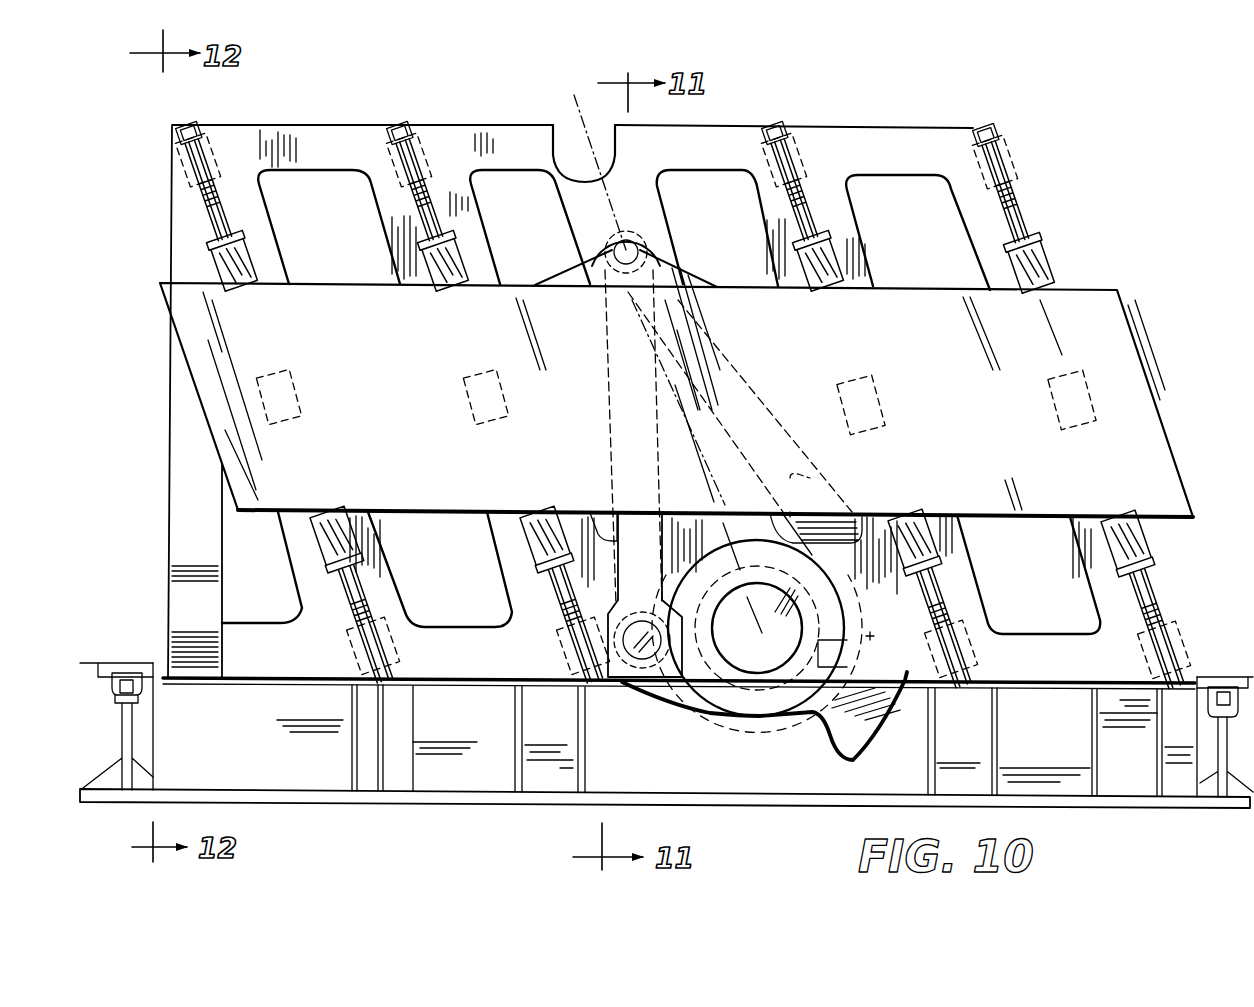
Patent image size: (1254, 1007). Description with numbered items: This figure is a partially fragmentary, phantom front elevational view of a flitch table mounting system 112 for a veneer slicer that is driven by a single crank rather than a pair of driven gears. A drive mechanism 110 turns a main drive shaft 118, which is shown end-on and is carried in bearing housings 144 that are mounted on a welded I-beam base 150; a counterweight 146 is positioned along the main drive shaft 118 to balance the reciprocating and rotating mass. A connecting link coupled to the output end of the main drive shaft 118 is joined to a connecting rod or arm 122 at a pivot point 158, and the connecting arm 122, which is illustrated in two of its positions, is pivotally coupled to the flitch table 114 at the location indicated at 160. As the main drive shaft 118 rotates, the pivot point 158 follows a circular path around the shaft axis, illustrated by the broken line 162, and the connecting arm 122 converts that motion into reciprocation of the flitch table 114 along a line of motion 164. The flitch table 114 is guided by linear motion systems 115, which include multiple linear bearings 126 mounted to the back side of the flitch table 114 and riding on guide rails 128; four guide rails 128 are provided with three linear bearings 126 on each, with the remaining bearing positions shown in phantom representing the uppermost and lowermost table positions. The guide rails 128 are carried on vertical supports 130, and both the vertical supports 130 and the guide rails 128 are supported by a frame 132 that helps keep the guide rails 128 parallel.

The drive mechanism 110 is at (750, 782).
The flitch table mounting system 112 is at (1120, 195).
The flitch table 114 is at (1135, 317).
The linear motion systems 115 is at (178, 118).
The main drive shaft 118 is at (763, 655).
The connecting rod or arm 122 is at (757, 387).
The linear bearings 126 is at (802, 150).
The guide rails 128 is at (420, 183).
The vertical supports 130 is at (434, 188).
The frame 132 is at (228, 140).
The bearing housings 144 is at (825, 637).
The counterweight 146 is at (867, 725).
The welded I-beam base 150 is at (295, 775).
The pivot point 158 is at (640, 667).
The pivotal coupling of connecting arm to flitch table 160 is at (632, 250).
The broken line (circular path) 162 is at (703, 732).
The line of motion 164 is at (578, 108).